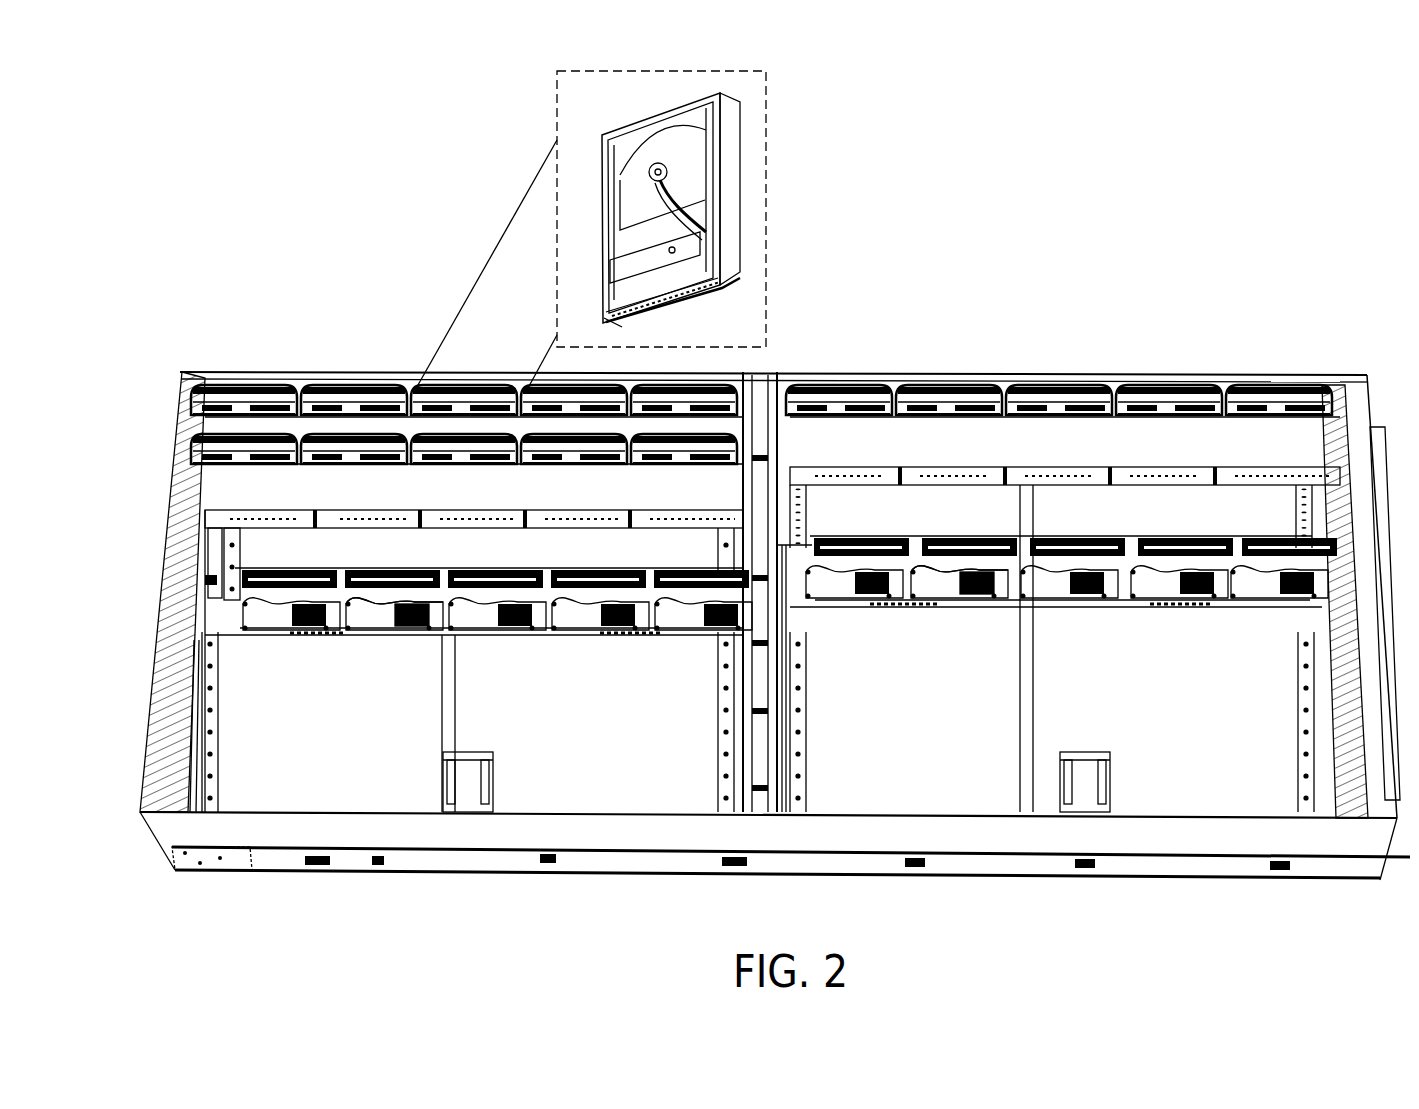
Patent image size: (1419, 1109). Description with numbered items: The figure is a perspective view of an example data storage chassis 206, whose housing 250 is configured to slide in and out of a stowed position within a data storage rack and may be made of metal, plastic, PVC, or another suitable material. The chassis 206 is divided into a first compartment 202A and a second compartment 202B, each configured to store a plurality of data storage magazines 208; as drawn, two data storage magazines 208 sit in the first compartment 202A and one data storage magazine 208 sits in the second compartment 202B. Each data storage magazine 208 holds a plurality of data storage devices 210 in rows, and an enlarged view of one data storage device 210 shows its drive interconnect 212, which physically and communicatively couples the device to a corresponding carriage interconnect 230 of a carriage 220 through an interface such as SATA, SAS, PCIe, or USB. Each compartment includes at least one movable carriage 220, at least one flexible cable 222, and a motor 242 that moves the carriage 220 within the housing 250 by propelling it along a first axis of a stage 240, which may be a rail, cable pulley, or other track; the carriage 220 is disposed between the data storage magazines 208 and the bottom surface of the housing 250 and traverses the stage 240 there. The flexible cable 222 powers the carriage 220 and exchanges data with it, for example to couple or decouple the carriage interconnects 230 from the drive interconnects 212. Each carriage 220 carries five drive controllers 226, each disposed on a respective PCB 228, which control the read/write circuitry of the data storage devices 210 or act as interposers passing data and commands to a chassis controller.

The chassis 206 is at (1278, 115).
The first compartment 202A is at (527, 792).
The second compartment 202B is at (968, 775).
The data storage magazine 208 is at (212, 420).
The data storage device 210 is at (767, 170).
The drive interconnect 212 is at (742, 300).
The carriage 220 is at (568, 628).
The flexible cable 222 is at (195, 748).
The drive controller 226 is at (418, 622).
The PCB 228 is at (396, 618).
The carriage interconnect 230 is at (262, 568).
The stage 240 is at (208, 785).
The motor 242 is at (480, 752).
The housing 250 is at (228, 862).